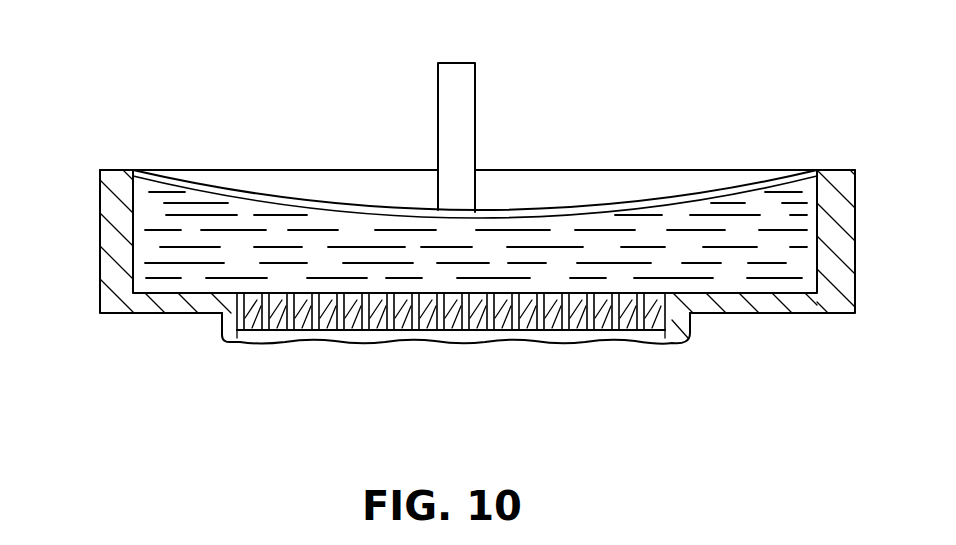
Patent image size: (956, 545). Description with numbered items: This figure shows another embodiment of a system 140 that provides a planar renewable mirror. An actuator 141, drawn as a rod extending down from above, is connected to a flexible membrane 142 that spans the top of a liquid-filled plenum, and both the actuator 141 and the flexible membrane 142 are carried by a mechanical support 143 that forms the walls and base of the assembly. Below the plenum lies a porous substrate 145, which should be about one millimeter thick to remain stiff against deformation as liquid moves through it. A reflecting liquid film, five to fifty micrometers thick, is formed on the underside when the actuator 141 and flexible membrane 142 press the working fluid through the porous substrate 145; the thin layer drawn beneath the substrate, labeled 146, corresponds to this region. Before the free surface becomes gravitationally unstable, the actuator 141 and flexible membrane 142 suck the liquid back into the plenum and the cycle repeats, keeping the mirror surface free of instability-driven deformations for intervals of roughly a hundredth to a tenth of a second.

The system 140 is at (258, 90).
The actuator 141 is at (473, 104).
The flexible membrane 142 is at (604, 204).
The mechanical support 143 is at (100, 295).
The porous substrate 145 is at (305, 318).
The bottom layer 146 is at (640, 348).